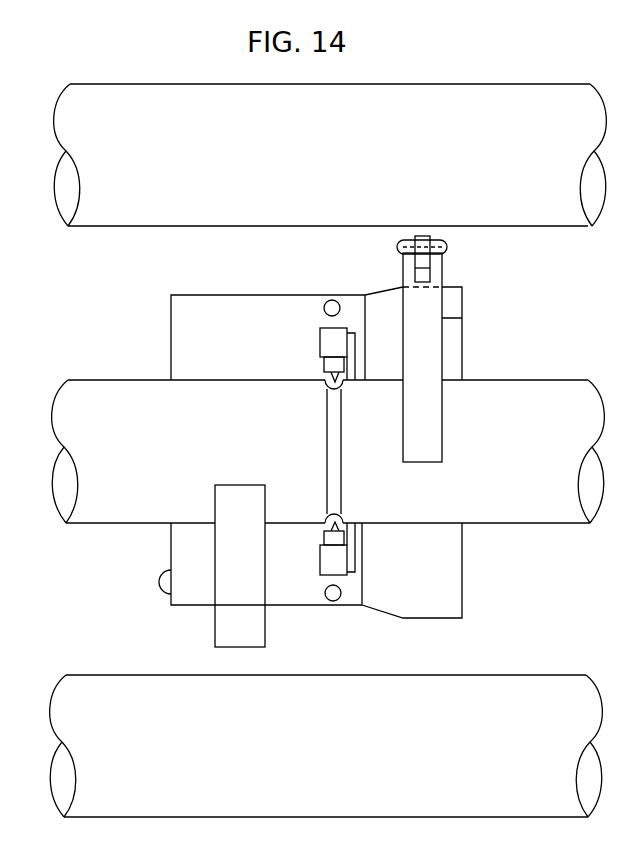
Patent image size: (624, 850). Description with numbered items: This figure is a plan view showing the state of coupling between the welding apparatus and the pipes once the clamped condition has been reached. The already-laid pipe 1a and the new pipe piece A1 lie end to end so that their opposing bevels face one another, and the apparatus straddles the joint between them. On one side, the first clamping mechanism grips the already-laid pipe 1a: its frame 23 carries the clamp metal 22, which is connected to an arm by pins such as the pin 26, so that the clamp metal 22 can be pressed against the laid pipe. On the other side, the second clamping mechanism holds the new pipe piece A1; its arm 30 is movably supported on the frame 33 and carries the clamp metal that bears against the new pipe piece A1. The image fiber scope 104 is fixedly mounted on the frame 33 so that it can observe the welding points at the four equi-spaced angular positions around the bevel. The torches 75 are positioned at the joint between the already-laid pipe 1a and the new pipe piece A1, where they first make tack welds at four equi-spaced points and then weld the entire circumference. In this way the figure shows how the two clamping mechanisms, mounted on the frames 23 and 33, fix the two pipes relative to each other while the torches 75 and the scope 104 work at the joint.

The already-laid pipe 1a is at (512, 380).
The new pipe piece A1 is at (104, 380).
The frame 33 is at (232, 295).
The clamp metal 22 is at (462, 318).
The pin 26 is at (447, 247).
The image fiber scope 104 is at (330, 300).
The torch 75 is at (318, 363).
The frame 23 is at (462, 558).
The arm 30 is at (208, 566).